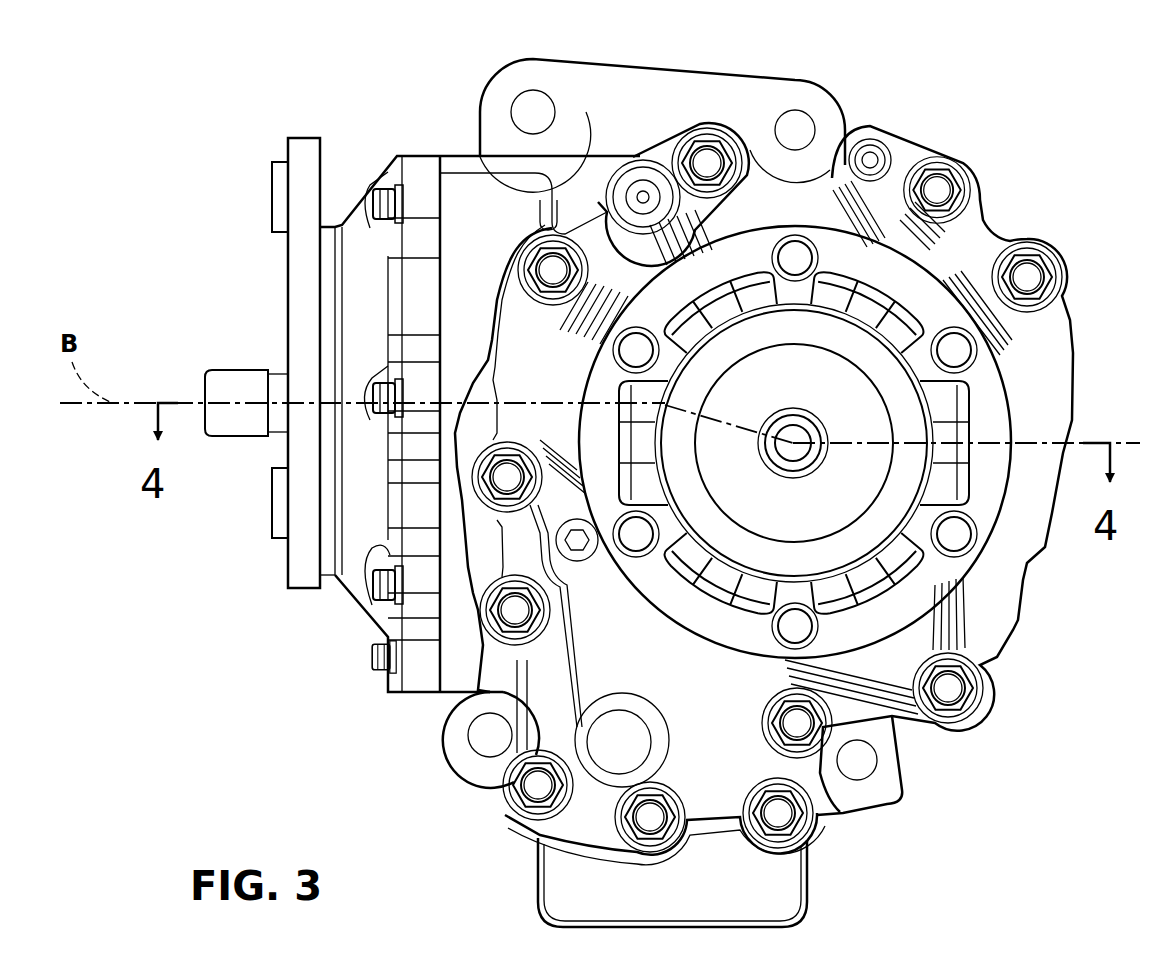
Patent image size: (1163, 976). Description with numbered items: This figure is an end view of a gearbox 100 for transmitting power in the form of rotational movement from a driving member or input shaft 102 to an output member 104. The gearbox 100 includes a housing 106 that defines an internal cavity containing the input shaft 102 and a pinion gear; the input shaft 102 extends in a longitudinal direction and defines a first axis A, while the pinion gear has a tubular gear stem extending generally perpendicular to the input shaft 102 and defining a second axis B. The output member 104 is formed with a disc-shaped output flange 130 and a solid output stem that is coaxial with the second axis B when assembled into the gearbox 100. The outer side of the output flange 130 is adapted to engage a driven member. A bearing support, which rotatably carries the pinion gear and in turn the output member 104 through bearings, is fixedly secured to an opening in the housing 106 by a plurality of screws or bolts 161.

The gearbox 100 is at (1075, 165).
The input shaft 102 is at (990, 425).
The output member 104 is at (286, 277).
The housing 106 is at (470, 160).
The output flange 130 is at (290, 550).
The screws or bolts 161 is at (383, 208).